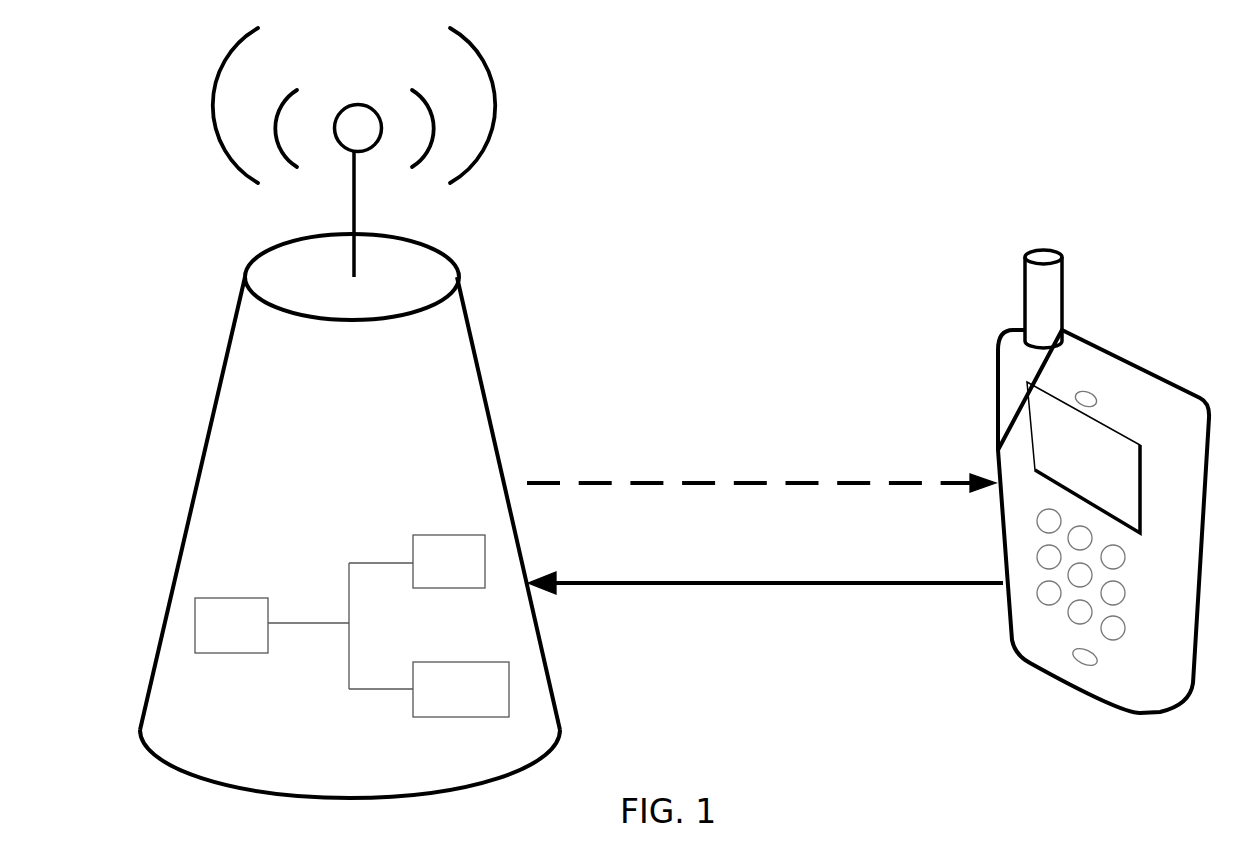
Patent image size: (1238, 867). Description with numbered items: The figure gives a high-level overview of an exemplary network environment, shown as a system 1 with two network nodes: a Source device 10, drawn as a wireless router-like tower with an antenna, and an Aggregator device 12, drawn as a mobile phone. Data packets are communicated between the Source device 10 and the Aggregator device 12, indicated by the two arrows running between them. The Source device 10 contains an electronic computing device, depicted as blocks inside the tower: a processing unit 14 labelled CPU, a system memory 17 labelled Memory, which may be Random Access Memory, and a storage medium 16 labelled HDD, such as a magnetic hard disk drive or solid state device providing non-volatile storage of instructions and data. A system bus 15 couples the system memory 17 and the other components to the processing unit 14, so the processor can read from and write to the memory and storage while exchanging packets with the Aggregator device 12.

The system 1 is at (709, 146).
The Source device 10 is at (207, 447).
The Aggregator device 12 is at (997, 392).
The processing unit 14 is at (232, 598).
The system bus 15 is at (313, 623).
The storage medium 16 is at (450, 535).
The system memory 17 is at (460, 717).